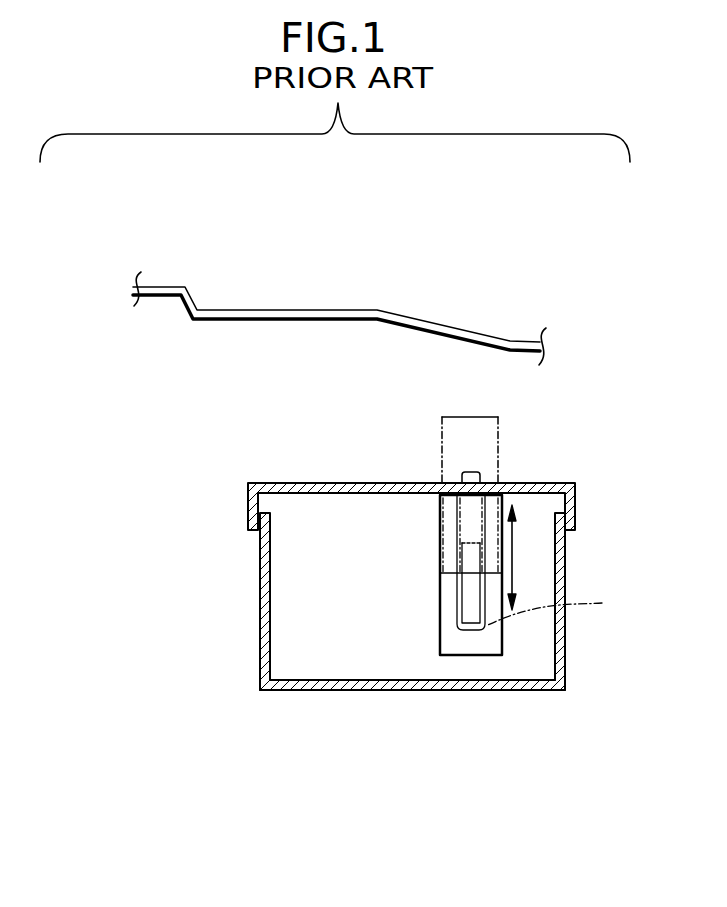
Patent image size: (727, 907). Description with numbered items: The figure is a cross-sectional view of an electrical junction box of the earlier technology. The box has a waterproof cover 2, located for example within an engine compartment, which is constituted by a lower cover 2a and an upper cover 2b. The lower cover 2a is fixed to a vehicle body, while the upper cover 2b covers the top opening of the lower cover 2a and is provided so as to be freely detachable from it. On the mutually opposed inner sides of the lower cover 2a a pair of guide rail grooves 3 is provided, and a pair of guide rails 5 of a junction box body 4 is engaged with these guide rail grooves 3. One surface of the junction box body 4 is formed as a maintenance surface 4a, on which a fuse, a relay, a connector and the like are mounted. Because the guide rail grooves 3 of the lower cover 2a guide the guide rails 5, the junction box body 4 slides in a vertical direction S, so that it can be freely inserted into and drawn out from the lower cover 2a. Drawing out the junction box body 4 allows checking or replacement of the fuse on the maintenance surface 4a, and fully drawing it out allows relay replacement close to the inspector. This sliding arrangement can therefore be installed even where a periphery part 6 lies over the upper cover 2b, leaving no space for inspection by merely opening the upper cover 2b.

The waterproof cover 2 is at (249, 652).
The lower cover 2a is at (503, 690).
The upper cover 2b is at (548, 483).
The guide rail grooves 3 is at (555, 607).
The junction box body 4 is at (487, 417).
The maintenance surface 4a is at (442, 450).
The guide rails 5 is at (480, 613).
The periphery part 6 is at (307, 310).
The vertical direction S is at (514, 550).